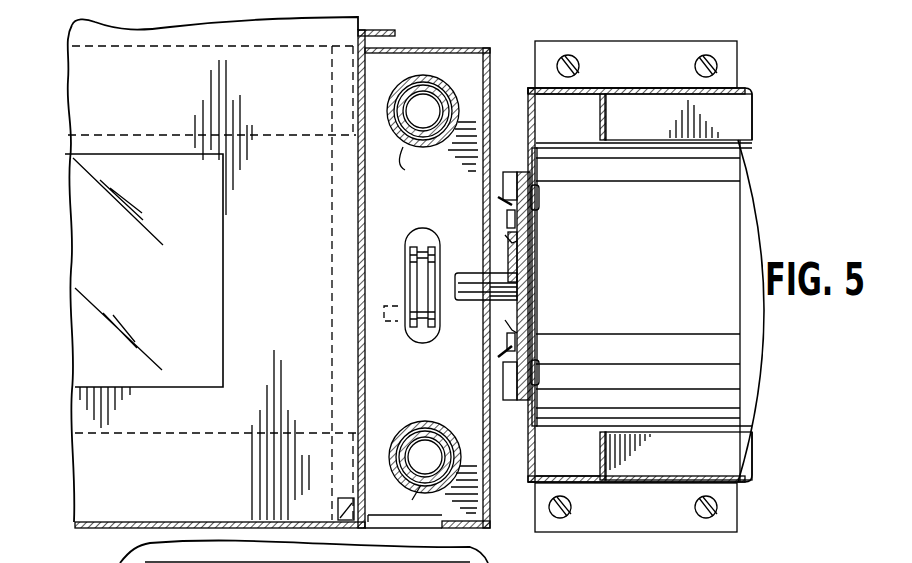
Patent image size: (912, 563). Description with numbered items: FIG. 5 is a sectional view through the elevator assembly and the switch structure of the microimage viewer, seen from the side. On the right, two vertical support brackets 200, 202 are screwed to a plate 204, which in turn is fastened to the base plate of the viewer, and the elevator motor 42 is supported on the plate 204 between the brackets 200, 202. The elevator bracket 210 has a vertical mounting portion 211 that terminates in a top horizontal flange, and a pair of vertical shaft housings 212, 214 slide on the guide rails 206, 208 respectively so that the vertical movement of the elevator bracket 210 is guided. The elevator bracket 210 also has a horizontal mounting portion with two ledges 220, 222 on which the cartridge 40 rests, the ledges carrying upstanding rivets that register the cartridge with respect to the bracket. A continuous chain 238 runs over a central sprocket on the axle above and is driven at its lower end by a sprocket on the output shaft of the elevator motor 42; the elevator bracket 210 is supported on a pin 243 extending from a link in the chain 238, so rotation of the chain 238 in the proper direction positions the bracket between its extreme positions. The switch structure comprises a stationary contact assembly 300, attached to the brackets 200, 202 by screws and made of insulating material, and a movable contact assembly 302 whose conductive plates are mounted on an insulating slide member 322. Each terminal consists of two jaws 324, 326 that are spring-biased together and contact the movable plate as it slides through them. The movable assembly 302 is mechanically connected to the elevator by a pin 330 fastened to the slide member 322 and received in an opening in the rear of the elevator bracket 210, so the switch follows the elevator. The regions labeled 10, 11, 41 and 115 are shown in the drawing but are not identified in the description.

The enclosure wall 10 is at (147, 285).
The enclosure compartment 11 is at (287, 290).
The cartridge 40 is at (98, 530).
The mounting plate 41 is at (748, 82).
The elevator motor 42 is at (668, 299).
The bracket 115 is at (363, 523).
The vertical support bracket 200 is at (723, 453).
The vertical support bracket 202 is at (740, 122).
The plate 204 is at (717, 508).
The guide rail 206 is at (395, 500).
The guide rail 208 is at (418, 97).
The elevator bracket 210 is at (471, 532).
The vertical mounting portion 211 is at (377, 202).
The vertical shaft housing 212 is at (422, 420).
The vertical shaft housing 214 is at (426, 166).
The ledge 220 is at (128, 432).
The ledge 222 is at (103, 133).
The continuous chain 238 is at (422, 243).
The pin 243 is at (384, 313).
The stationary contact assembly 300 is at (535, 184).
The movable contact assembly 302 is at (548, 258).
The slide member 322 is at (527, 292).
The jaw 324 is at (507, 318).
The jaw 326 is at (530, 326).
The pin 330 is at (465, 280).